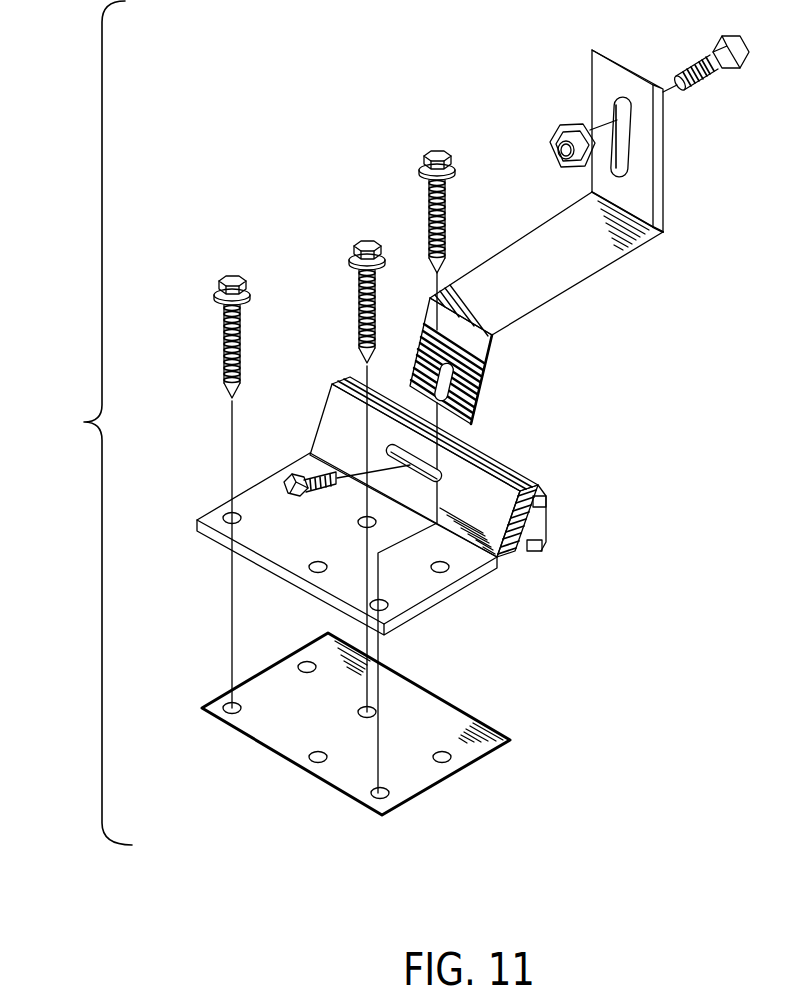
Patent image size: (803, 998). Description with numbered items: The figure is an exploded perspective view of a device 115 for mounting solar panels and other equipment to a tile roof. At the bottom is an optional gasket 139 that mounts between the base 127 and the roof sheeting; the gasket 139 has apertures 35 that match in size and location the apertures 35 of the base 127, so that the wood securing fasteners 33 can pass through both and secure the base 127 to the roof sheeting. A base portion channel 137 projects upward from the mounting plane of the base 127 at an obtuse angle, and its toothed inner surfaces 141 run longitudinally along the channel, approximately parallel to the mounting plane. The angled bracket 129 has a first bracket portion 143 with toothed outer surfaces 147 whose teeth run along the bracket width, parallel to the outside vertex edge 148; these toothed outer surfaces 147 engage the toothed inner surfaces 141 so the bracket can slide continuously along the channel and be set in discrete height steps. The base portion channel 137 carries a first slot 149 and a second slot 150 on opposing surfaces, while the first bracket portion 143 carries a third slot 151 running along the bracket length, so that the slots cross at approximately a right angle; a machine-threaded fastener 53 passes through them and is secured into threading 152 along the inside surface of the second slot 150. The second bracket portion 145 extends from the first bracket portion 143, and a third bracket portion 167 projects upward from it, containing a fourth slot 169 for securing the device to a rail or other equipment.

The device 115 is at (77, 423).
The wood securing fasteners 33 is at (226, 275).
The base 127 is at (381, 506).
The base portion channel 137 is at (469, 499).
The toothed inner surfaces 141 is at (522, 553).
The second slot 150 is at (575, 523).
The threading 152 is at (540, 500).
The first slot 149 is at (444, 478).
The machine-threaded fastener 53 is at (290, 496).
The gasket 139 is at (377, 746).
The apertures 35 is at (225, 700).
The angled bracket 129 is at (564, 233).
The third bracket portion 167 is at (624, 131).
The fourth slot 169 is at (614, 112).
The second bracket portion 145 is at (522, 240).
The outside vertex edge 148 is at (478, 318).
The first bracket portion 143 is at (472, 376).
The toothed outer surfaces 147 is at (415, 352).
The third slot 151 is at (476, 400).